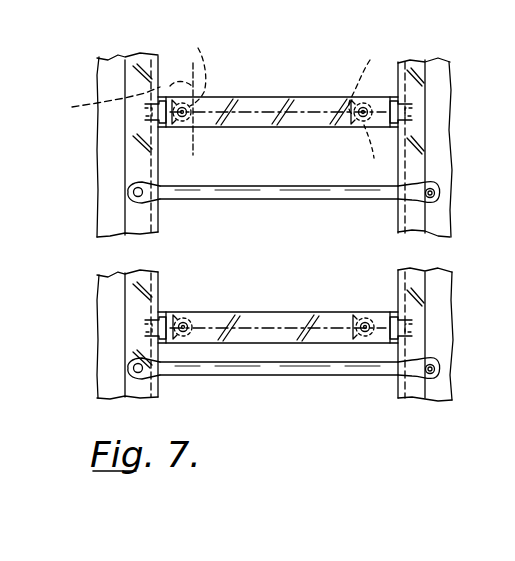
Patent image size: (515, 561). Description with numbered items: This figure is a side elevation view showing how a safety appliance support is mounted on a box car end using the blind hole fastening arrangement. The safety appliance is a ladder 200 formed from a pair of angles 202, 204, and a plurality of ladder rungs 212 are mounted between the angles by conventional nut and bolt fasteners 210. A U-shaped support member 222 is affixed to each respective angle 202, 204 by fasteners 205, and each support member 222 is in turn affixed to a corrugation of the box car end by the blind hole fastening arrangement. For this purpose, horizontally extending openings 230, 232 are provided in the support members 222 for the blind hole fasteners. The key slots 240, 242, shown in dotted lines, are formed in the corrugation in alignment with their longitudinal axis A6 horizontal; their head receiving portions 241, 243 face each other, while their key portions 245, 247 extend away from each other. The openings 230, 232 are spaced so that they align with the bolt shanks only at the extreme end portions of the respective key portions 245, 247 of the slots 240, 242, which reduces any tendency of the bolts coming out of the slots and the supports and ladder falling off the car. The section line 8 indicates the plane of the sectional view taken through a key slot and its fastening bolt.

The ladder 200 is at (85, 229).
The angle 202 is at (138, 285).
The angle 204 is at (412, 232).
The fastener 205 is at (392, 362).
The nut and bolt fastener 210 is at (432, 362).
The ladder rung 212 is at (237, 192).
The U-shaped support member 222 is at (262, 98).
The opening 230 is at (189, 313).
The opening 232 is at (368, 314).
The key slot 240 is at (199, 119).
The head receiving portion 241 is at (198, 48).
The key slot 242 is at (357, 120).
The head receiving portion 243 is at (370, 60).
The key portion 245 is at (89, 106).
The key portion 247 is at (372, 156).
The section line 8- 8 is at (191, 153).
The longitudinal axis A6 is at (302, 111).